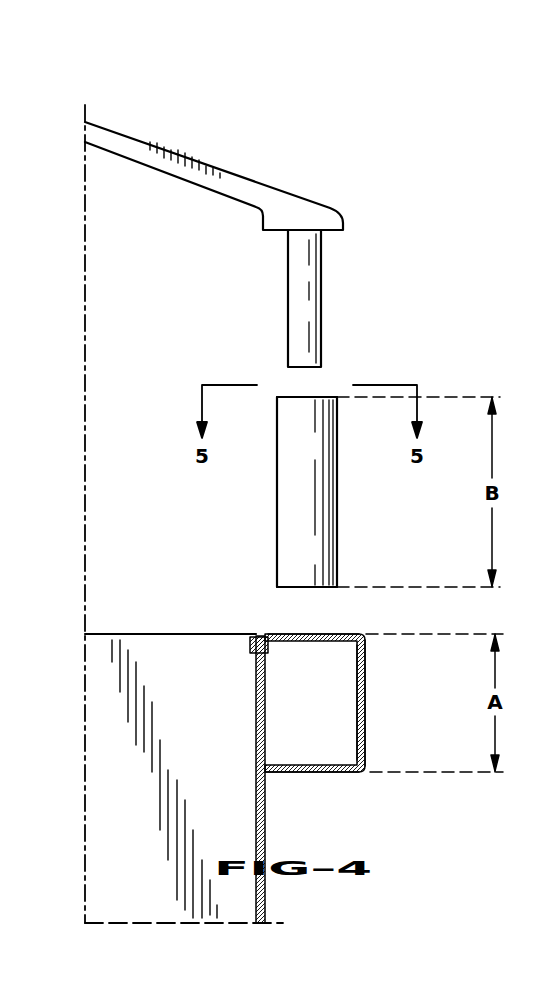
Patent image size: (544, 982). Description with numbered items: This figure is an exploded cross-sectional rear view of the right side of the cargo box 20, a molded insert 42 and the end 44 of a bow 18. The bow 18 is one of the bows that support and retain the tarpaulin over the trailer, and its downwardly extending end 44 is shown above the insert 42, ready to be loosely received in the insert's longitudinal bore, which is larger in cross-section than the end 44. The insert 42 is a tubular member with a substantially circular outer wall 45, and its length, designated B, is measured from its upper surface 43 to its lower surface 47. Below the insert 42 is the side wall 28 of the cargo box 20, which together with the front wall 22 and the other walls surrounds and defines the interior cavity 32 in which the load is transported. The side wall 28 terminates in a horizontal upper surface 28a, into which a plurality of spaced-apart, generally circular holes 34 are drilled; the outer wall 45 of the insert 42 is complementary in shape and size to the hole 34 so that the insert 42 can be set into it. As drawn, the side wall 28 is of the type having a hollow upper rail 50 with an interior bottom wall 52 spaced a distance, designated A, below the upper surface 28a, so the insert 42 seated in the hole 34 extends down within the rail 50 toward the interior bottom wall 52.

The bow 18 is at (233, 172).
The end of bow 44 is at (321, 290).
The molded insert 42 is at (276, 508).
The upper surface of insert 43 is at (318, 397).
The outer wall of insert 45 is at (303, 548).
The lower surface of insert 47 is at (297, 588).
The front wall 22 is at (148, 873).
The side wall 28 is at (338, 762).
The upper surface of side wall 28a is at (348, 634).
The hollow upper rail 50 is at (366, 705).
The cargo box 20 is at (384, 737).
The interior bottom wall 52 is at (310, 765).
The hole 34 is at (288, 634).
The interior cavity 32 is at (222, 791).